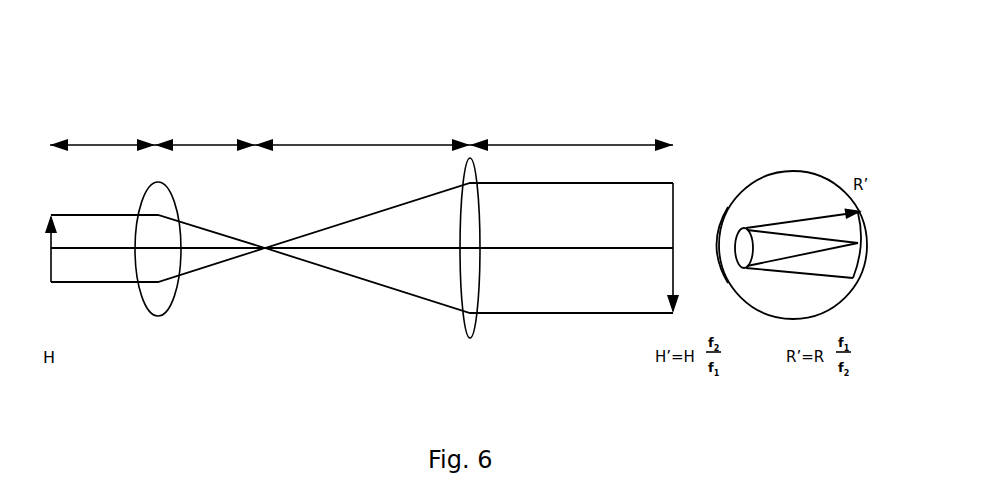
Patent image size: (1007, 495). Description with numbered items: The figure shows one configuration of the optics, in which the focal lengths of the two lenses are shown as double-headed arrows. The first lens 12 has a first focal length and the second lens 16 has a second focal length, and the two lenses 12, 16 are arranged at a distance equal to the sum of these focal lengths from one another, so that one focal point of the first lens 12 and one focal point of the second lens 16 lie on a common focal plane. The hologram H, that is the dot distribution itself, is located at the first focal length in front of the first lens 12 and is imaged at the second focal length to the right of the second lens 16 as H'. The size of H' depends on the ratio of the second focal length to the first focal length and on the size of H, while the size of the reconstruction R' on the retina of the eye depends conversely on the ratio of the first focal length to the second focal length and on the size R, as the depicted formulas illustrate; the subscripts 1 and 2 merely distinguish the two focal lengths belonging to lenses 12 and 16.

The first lens 12 is at (158, 274).
The second lens 16 is at (470, 262).
The focal length f1 of first lens 1 is at (152, 130).
The focal length f2 of second lens 2 is at (464, 128).